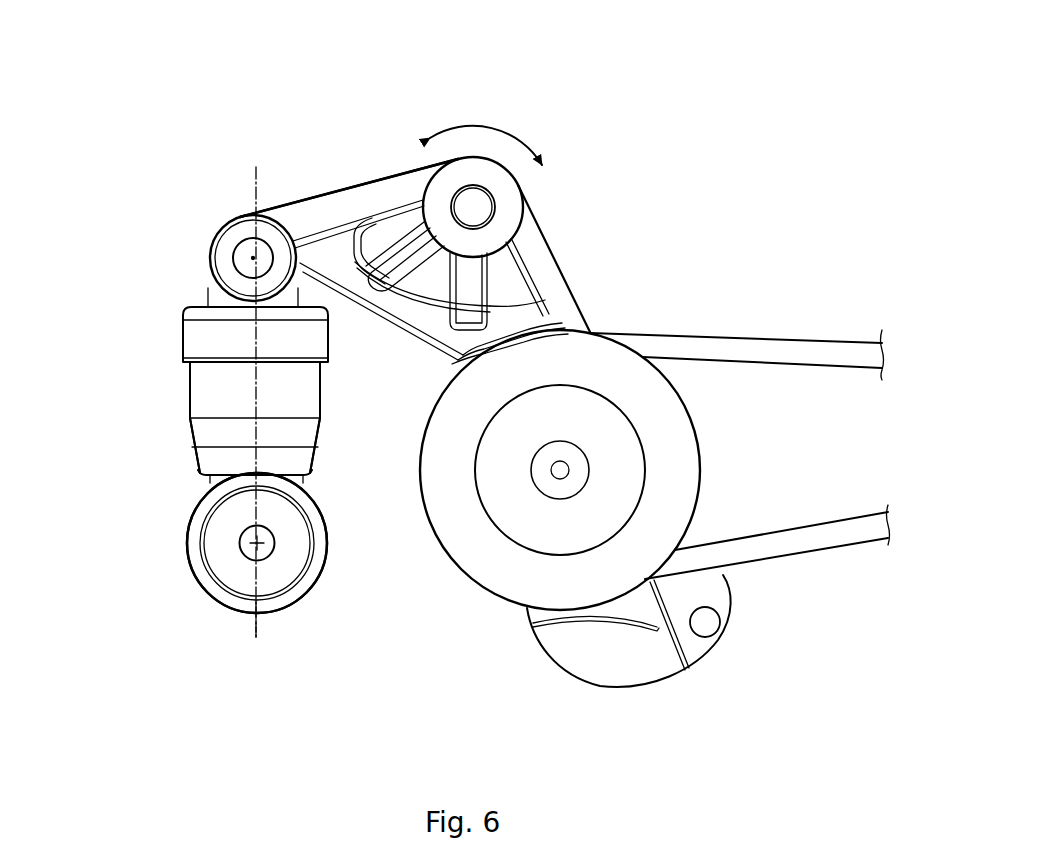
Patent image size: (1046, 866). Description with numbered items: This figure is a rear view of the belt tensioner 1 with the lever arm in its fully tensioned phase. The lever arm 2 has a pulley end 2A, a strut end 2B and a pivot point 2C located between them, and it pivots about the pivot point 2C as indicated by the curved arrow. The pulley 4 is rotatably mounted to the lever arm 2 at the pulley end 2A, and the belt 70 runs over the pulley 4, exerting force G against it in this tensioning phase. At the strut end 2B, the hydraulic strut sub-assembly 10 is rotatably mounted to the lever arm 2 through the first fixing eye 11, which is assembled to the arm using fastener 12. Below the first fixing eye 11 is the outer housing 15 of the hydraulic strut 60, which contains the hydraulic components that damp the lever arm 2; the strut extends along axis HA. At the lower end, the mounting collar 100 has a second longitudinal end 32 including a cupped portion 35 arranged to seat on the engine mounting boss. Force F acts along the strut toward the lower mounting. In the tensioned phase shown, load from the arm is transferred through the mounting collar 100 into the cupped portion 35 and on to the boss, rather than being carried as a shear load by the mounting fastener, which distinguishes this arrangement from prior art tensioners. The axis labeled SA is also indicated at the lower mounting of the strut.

The belt tensioner 1 is at (603, 107).
The lever arm 2 is at (353, 186).
The pulley end 2A is at (617, 667).
The strut end 2B is at (313, 215).
The pivot point 2C is at (527, 212).
The pulley 4 is at (600, 353).
The hydraulic strut sub-assembly 10 is at (175, 387).
The first fixing eye 11 is at (233, 215).
The fastener 12 is at (235, 248).
The outer housing 15 is at (188, 445).
The second longitudinal end 32 is at (188, 563).
The cupped portion 35 is at (238, 572).
The hydraulic strut 60 is at (305, 457).
The belt 70 is at (753, 353).
The mounting collar 100 is at (290, 595).
The swivel axis SA is at (273, 542).
The axis of hydraulic strut HA is at (262, 630).
The force F is at (252, 83).
The force G is at (848, 443).